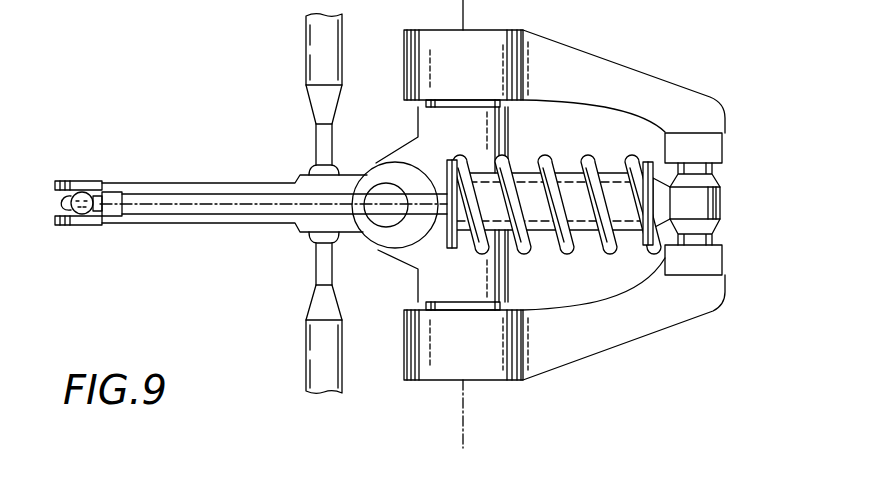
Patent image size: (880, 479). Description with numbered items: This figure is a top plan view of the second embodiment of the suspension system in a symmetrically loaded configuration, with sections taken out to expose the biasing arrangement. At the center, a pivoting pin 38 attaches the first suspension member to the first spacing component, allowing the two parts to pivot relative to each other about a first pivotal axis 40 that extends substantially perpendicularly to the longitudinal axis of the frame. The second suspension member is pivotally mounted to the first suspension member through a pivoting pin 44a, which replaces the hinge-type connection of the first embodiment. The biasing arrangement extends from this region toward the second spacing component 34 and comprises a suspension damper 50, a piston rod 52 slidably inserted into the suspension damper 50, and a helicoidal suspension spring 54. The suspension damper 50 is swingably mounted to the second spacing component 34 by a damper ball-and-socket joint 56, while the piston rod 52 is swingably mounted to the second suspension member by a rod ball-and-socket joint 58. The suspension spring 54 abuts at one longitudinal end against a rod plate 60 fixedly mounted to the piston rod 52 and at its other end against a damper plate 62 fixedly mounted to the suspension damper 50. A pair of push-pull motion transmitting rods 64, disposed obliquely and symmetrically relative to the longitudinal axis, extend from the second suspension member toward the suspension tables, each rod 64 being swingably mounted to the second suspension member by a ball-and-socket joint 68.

The second spacing component 34 is at (718, 150).
The pivoting pin 38 is at (433, 363).
The first pivotal axis 40 is at (470, 440).
The pivoting pin 44a is at (387, 219).
The suspension damper 50 is at (613, 175).
The piston rod 52 is at (192, 207).
The helicoidal suspension spring 54 is at (572, 243).
The damper ball-and-socket joint 56 is at (716, 228).
The rod ball-and-socket joint 58 is at (82, 225).
The rod plate 60 is at (452, 170).
The damper plate 62 is at (650, 248).
The motion transmitting rods 64 is at (317, 42).
The ball-and-socket joint 68 is at (315, 233).